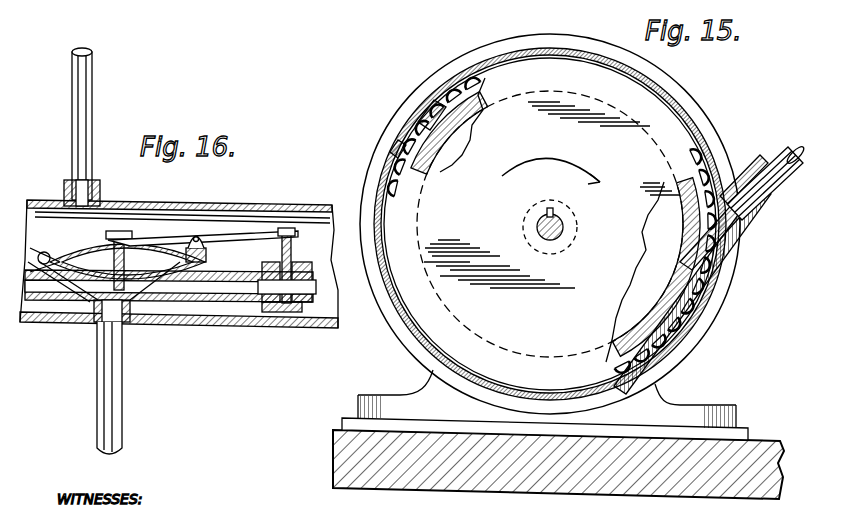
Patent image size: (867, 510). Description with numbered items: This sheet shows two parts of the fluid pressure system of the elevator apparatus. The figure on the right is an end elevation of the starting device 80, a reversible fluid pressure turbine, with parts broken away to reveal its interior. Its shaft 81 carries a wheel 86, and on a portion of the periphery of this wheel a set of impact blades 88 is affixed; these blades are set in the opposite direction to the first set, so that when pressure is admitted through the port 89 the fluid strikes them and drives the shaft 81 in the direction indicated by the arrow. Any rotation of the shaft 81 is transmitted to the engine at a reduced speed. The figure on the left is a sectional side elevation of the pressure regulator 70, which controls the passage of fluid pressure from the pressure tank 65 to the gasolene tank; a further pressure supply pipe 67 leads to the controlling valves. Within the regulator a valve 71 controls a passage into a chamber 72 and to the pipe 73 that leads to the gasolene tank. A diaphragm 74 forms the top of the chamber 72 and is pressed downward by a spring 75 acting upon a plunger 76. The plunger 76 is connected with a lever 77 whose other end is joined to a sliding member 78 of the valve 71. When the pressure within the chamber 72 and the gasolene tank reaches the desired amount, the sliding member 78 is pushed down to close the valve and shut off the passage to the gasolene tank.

In FIG. 16, the pressure tank 65 is at (266, 212).
In FIG. 16, the pressure supply pipe 67 is at (89, 109).
In FIG. 16, the pressure regulator 70 is at (72, 242).
In FIG. 16, the valve 71 is at (290, 282).
In FIG. 16, the chamber 72 is at (76, 324).
In FIG. 16, the pipe 73 is at (112, 408).
In FIG. 16, the diaphragm 74 is at (150, 324).
In FIG. 16, the spring 75 is at (101, 257).
In FIG. 16, the plunger 76 is at (120, 262).
In FIG. 16, the lever 77 is at (237, 240).
In FIG. 16, the sliding member 78 is at (291, 256).
In FIG. 15, the starting device 80 is at (425, 73).
In FIG. 15, the shaft 81 is at (547, 238).
In FIG. 15, the wheel 86 is at (688, 351).
In FIG. 15, the impact blades 88 is at (698, 184).
In FIG. 15, the port 89 is at (762, 186).